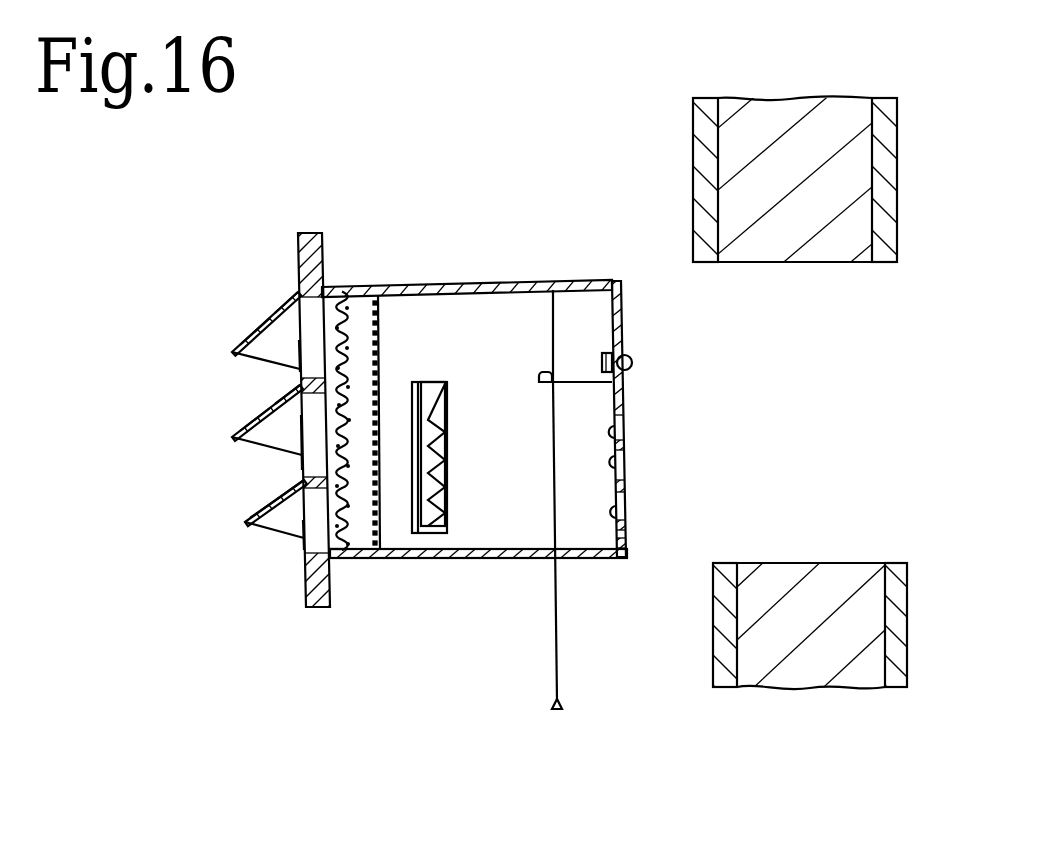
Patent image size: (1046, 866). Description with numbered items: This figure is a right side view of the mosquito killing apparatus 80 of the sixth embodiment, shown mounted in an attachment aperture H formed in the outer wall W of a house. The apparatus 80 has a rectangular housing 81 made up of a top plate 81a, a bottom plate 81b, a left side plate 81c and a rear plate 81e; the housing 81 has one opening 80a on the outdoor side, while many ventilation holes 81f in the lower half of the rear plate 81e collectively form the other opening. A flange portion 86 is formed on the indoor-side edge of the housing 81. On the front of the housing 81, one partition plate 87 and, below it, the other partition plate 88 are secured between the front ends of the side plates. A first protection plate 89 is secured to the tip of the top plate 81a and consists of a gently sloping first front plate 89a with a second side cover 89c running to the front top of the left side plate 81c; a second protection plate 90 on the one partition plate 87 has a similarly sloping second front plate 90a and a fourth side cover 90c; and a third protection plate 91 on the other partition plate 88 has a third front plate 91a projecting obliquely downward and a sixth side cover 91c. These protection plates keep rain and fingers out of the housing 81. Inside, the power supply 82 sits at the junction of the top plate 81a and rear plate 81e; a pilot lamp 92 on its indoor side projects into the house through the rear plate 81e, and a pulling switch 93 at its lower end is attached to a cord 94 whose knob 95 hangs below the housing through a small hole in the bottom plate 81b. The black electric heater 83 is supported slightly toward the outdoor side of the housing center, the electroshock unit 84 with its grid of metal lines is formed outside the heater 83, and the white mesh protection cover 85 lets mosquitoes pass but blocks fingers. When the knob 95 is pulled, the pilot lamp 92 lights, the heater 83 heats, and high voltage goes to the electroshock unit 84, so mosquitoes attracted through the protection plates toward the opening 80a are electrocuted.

The mosquito killing apparatus 80 is at (526, 436).
The one opening 80a is at (323, 343).
The housing 81 is at (534, 399).
The top plate 81a is at (450, 297).
The bottom plate 81b is at (491, 558).
The left side plate 81c is at (580, 520).
The rear plate 81e is at (622, 402).
The ventilation holes 81f is at (622, 425).
The power supply 82 is at (585, 323).
The electric heater 83 is at (426, 503).
The electroshock unit 84 is at (388, 525).
The protection cover 85 is at (336, 556).
The flange portion 86 is at (309, 233).
The one partition plate 87 is at (300, 418).
The other partition plate 88 is at (288, 537).
The first protection plate 89 is at (240, 279).
The first front plate 89a is at (250, 333).
The second side cover 89c is at (287, 317).
The second protection plate 90 is at (232, 422).
The second front plate 90a is at (262, 415).
The fourth side cover 90c is at (283, 396).
The third protection plate 91 is at (238, 555).
The third front plate 91a is at (258, 498).
The sixth side cover 91c is at (272, 515).
The pilot lamp 92 is at (633, 362).
The pulling switch 93 is at (540, 372).
The cord 94 is at (555, 657).
The knob 95 is at (560, 706).
The wall W is at (693, 140).
The attachment aperture H is at (740, 262).